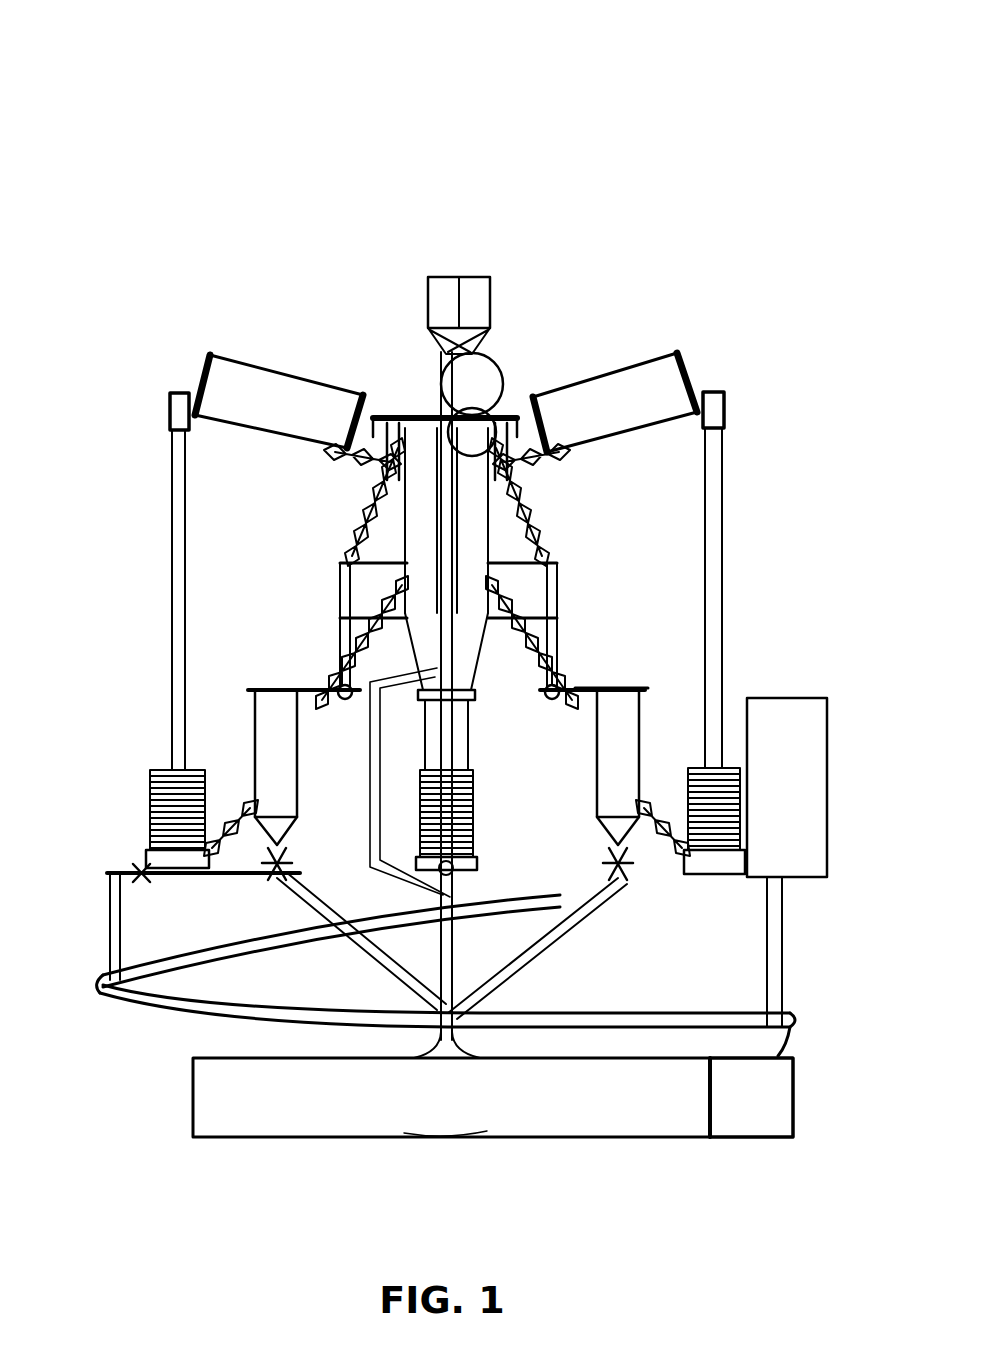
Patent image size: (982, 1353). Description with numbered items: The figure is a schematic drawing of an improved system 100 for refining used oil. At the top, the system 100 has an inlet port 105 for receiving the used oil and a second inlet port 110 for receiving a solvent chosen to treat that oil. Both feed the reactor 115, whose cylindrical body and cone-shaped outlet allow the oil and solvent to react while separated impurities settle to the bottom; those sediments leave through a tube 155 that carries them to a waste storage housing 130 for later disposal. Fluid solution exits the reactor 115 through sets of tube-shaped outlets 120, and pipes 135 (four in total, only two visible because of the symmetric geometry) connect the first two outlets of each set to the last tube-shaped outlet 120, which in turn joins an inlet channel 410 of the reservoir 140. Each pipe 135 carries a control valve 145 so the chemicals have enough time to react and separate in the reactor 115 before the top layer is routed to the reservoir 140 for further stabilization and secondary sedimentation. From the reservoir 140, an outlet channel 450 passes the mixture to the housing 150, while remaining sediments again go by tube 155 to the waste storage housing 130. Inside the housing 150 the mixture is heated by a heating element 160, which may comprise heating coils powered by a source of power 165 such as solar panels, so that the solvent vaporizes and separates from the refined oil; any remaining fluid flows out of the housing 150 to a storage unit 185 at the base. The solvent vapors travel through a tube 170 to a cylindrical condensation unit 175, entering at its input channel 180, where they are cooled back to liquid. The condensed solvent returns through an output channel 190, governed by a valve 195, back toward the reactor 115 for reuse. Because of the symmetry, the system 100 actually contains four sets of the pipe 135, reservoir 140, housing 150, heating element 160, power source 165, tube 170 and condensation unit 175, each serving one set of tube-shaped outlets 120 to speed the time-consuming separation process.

The system for refining used oil 100 is at (133, 29).
The inlet port 105 is at (450, 275).
The inlet port 110 is at (472, 273).
The reactor 115 is at (400, 487).
The tube-shaped outlets 120 is at (188, 513).
The waste storage housing 130 is at (227, 1057).
The pipes 135 is at (333, 647).
The reservoir 140 is at (302, 752).
The control valve 145 is at (530, 697).
The housing 150 is at (700, 762).
The tube 155 is at (568, 915).
The heating element 160 is at (148, 815).
The source of power 165 is at (805, 697).
The tube 170 is at (710, 495).
The condensation unit 175 is at (313, 383).
The input channel 180 is at (698, 382).
The storage unit 185 is at (797, 1097).
The output channel 190 is at (533, 460).
The valve 195 is at (523, 463).
The inlet channel 410 is at (590, 717).
The outlet channel 450 is at (652, 862).